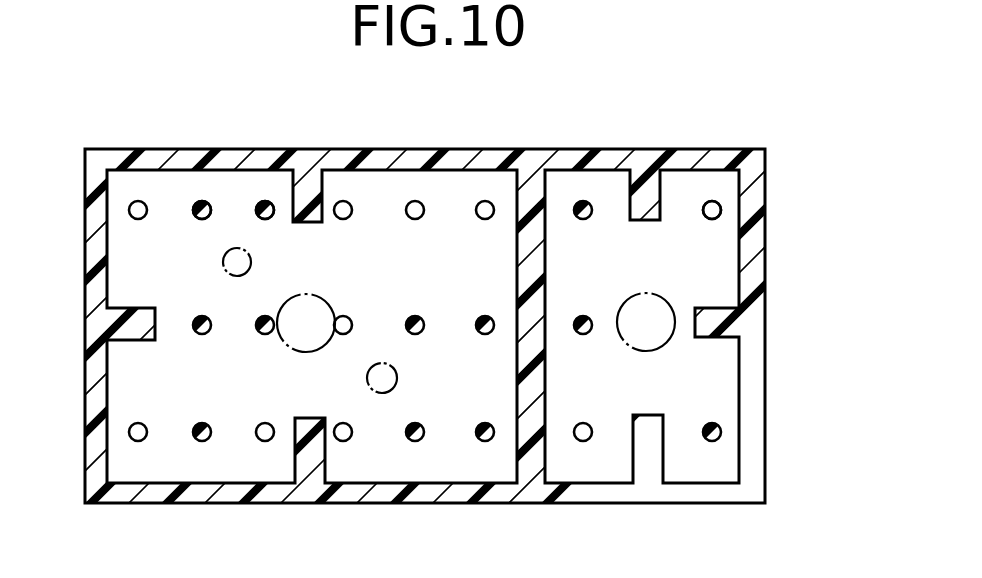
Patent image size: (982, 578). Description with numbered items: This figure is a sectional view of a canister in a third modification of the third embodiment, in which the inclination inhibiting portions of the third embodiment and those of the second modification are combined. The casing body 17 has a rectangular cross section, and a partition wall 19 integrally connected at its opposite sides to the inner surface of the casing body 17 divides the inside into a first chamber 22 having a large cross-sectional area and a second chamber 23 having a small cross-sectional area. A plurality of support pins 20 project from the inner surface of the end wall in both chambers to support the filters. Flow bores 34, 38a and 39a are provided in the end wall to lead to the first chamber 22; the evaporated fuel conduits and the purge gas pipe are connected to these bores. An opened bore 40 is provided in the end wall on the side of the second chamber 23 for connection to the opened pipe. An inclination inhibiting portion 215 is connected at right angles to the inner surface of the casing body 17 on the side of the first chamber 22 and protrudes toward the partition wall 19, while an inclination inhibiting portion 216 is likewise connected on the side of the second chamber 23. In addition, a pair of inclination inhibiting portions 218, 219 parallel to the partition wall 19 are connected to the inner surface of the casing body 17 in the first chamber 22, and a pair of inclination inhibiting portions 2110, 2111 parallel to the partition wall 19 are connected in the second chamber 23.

The casing body 17 is at (468, 150).
The partition wall 19 is at (536, 271).
The support pins 20 is at (263, 200).
The first chamber 22 is at (230, 400).
The second chamber 23 is at (617, 400).
The flow bore 34 is at (327, 302).
The flow bore 38a is at (223, 259).
The flow bore 39a is at (382, 393).
The opened bore 40 is at (666, 301).
The inclination inhibiting portion 215 is at (135, 308).
The inclination inhibiting portion 216 is at (713, 318).
The inclination inhibiting portion 218 is at (316, 224).
The inclination inhibiting portion 219 is at (302, 438).
The inclination inhibiting portion 2110 is at (660, 204).
The inclination inhibiting portion 2111 is at (656, 436).